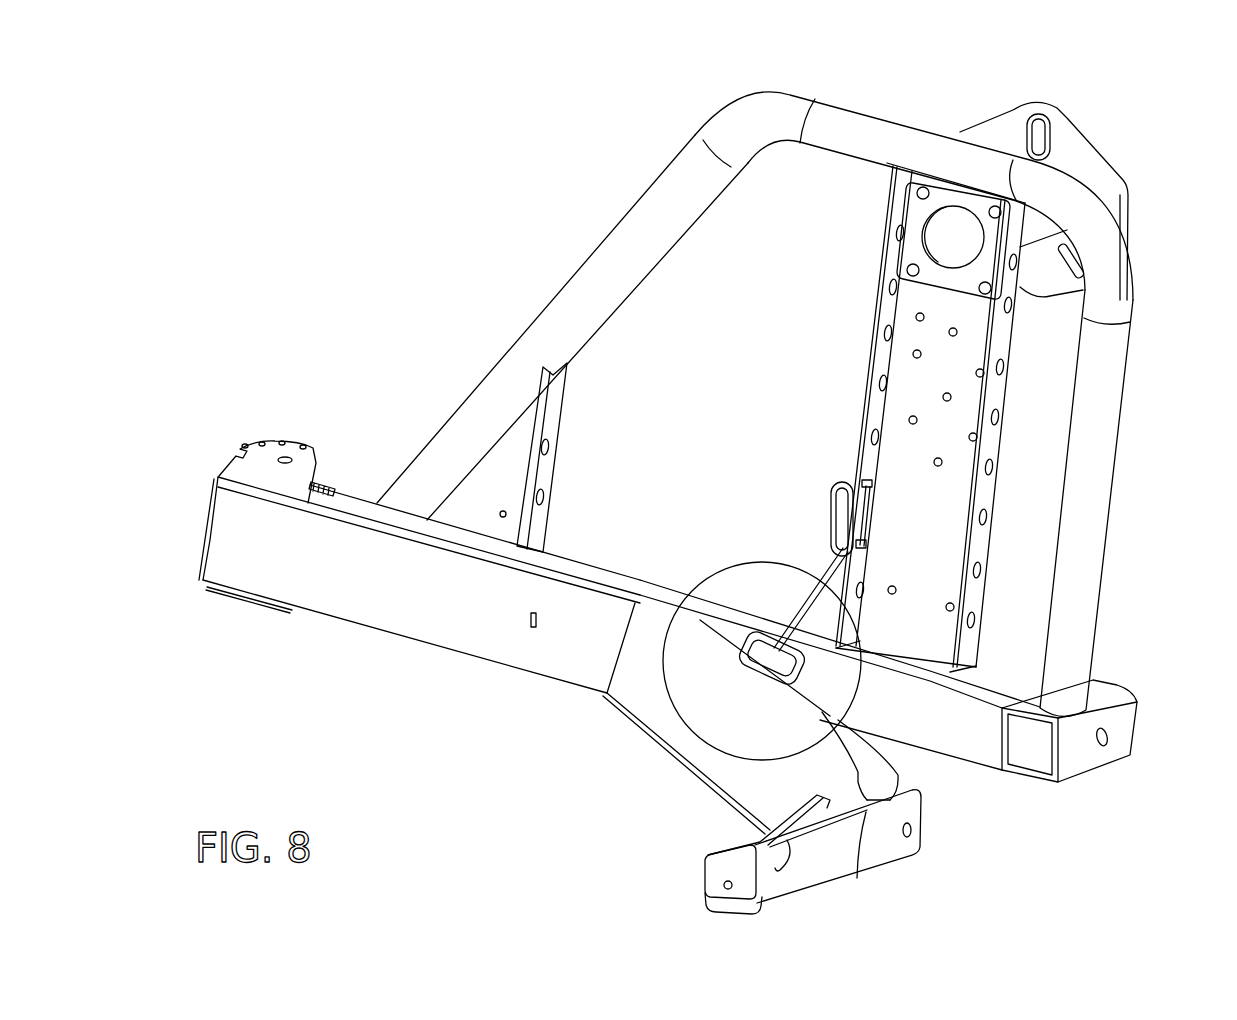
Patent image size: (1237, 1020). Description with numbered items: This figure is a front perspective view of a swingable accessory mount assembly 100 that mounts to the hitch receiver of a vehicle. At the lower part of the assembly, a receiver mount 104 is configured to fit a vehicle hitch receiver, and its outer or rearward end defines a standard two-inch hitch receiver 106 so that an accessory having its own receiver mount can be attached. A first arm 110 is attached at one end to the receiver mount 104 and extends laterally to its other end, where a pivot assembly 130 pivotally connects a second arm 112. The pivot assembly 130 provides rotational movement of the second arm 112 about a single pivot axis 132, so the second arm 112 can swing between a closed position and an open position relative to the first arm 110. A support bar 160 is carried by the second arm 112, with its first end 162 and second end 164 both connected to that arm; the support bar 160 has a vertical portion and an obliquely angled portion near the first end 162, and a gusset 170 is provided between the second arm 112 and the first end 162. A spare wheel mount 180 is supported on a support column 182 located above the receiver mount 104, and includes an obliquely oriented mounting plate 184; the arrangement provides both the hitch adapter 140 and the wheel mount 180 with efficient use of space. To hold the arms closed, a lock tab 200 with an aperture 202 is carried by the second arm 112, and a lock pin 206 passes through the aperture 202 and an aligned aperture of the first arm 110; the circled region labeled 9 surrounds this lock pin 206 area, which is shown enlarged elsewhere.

The accessory mount assembly 100 is at (472, 167).
The support bar 160 is at (875, 78).
The first end 162 is at (577, 287).
The second end 164 is at (1110, 406).
The mounting plate 184 is at (1097, 146).
The spare wheel mount 180 is at (1017, 410).
The support column 182 is at (987, 544).
The gusset 170 is at (578, 455).
The pivot assembly 130 is at (232, 423).
The pivot axis 132 is at (286, 455).
The second arm 112 is at (490, 650).
The first arm 110 is at (1000, 683).
The hitch adapter 140 is at (1125, 697).
The aperture 202 is at (660, 742).
The lock tab 200 is at (887, 770).
The lock pin 206 is at (730, 628).
The tether cable 9 is at (767, 557).
The receiver mount 104 is at (863, 893).
The hitch receiver 106 is at (914, 836).